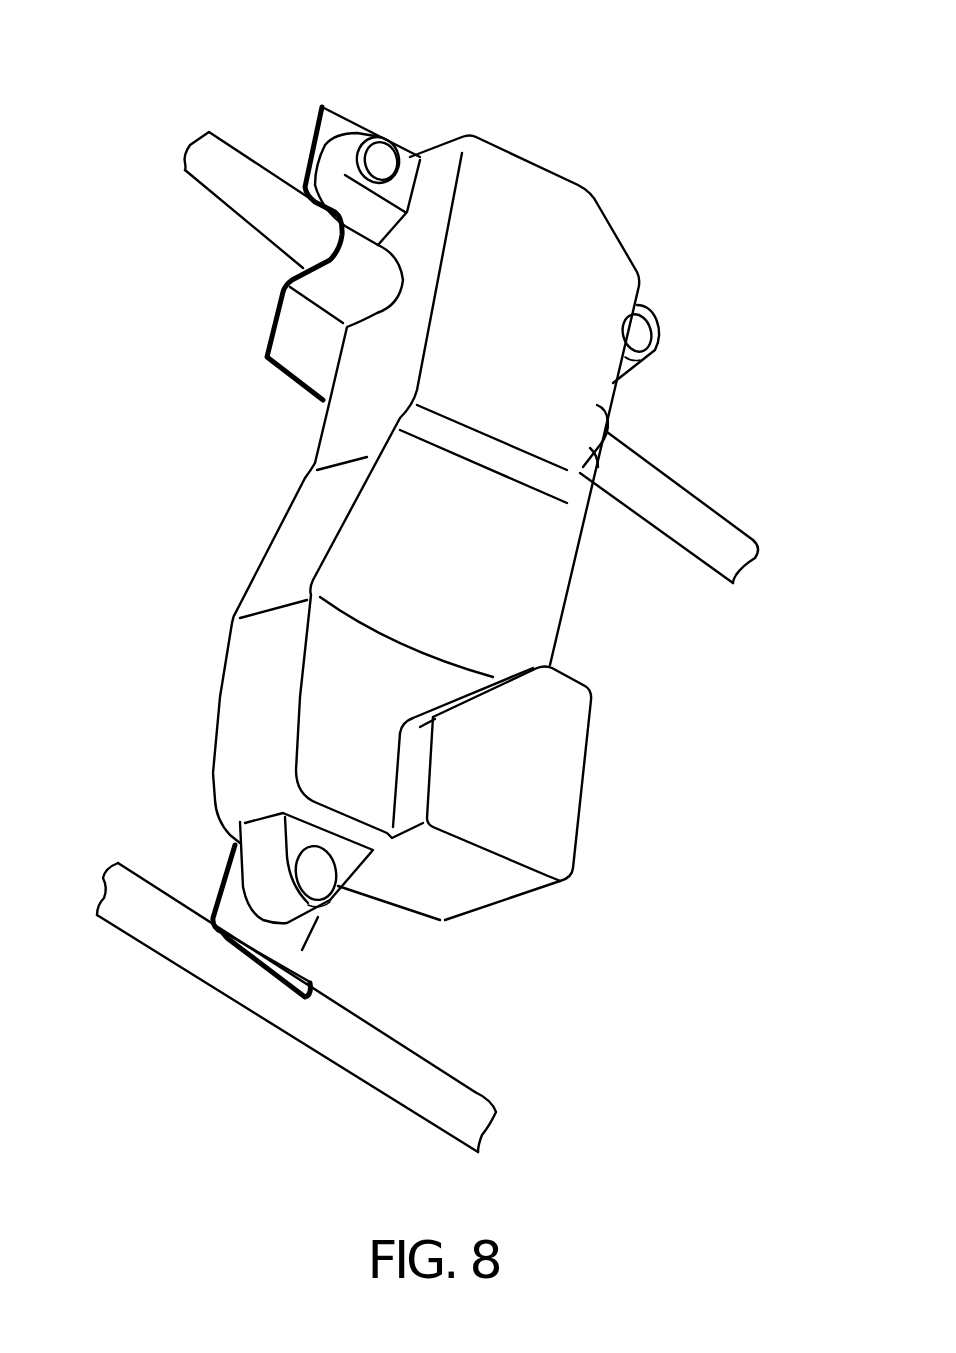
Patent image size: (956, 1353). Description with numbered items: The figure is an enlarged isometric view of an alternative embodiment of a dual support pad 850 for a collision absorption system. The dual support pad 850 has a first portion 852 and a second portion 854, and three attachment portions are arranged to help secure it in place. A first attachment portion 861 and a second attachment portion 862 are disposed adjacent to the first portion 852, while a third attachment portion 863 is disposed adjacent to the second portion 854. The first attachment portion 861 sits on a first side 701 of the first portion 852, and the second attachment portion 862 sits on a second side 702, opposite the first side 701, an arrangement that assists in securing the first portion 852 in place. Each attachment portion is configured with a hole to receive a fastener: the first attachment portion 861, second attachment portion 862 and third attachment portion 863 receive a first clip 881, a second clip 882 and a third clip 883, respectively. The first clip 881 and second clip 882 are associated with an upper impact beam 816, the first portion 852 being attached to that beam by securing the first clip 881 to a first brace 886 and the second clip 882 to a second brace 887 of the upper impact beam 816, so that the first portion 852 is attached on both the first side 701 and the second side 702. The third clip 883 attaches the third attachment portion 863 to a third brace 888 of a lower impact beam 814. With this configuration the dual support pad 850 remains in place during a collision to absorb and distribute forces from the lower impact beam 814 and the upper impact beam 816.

The dual support pad 850 is at (584, 127).
The first portion 852 is at (535, 347).
The second portion 854 is at (382, 722).
The second attachment portion 862 is at (335, 163).
The third attachment portion 863 is at (340, 887).
The second clip 882 is at (383, 162).
The third clip 883 is at (323, 886).
The first clip 881 is at (638, 318).
The first attachment portion 861 is at (657, 335).
The first side 701 is at (605, 392).
The second side 702 is at (337, 442).
The first brace 886 is at (587, 453).
The second brace 887 is at (287, 343).
The third brace 888 is at (230, 908).
The lower impact beam 814 is at (343, 1055).
The upper impact beam 816 is at (722, 535).